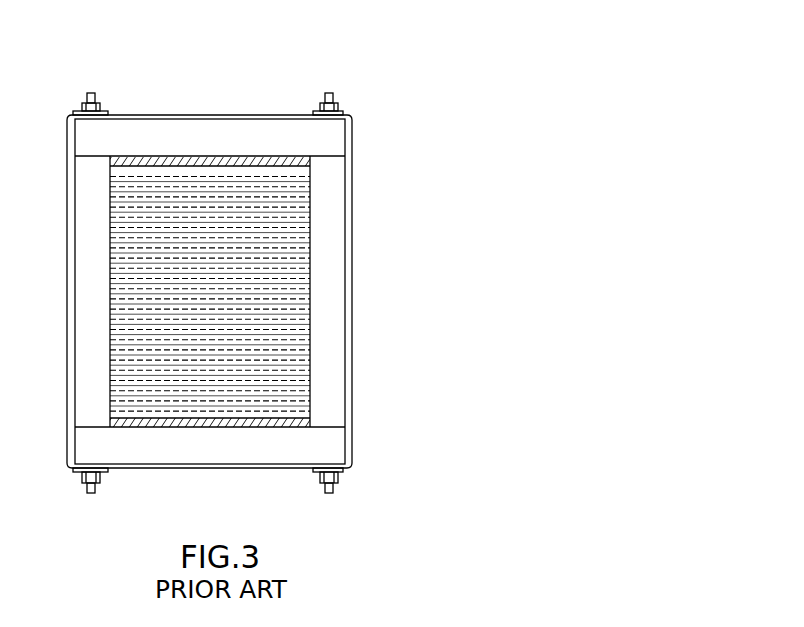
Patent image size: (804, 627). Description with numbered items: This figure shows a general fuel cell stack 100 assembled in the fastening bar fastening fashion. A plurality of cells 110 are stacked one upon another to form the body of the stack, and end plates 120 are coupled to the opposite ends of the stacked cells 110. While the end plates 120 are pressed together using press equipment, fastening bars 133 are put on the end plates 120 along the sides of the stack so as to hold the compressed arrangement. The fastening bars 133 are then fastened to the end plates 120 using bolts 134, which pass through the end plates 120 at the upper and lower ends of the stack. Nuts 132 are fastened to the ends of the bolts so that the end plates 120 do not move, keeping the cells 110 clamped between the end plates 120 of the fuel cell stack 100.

The fuel cell stack 100 is at (263, 266).
The cells 110 is at (297, 247).
The end plates 120 is at (335, 138).
The nuts 132 is at (317, 103).
The fastening bars 133 is at (348, 343).
The bolts 134 is at (333, 488).